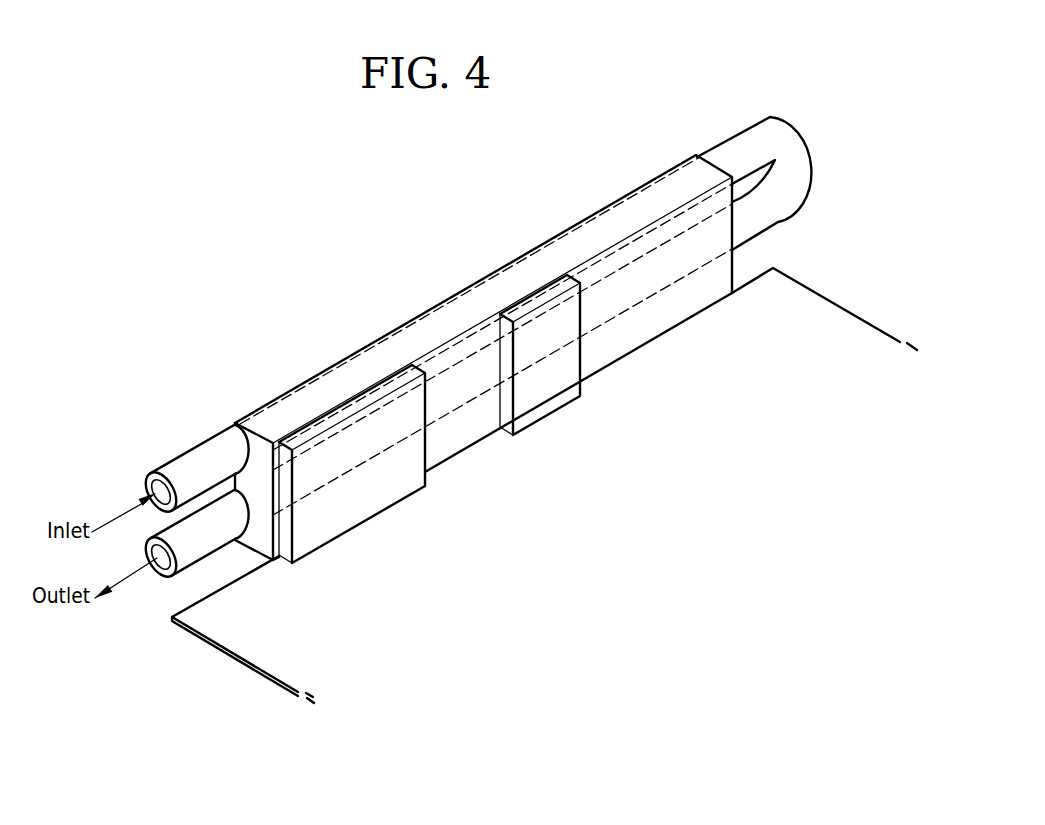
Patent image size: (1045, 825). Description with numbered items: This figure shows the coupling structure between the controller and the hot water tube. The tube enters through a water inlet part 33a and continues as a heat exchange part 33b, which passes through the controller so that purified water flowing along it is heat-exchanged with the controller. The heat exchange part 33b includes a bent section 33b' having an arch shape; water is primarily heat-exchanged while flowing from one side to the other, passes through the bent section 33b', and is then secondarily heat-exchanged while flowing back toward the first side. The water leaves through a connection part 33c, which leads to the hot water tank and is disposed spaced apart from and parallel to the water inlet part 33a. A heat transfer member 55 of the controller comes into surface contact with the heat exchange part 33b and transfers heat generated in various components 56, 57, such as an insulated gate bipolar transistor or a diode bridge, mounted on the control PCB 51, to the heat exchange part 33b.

The water inlet part 33a is at (143, 483).
The heat exchange part 33b is at (486, 336).
The bent section 33b' is at (761, 143).
The connection part 33c is at (143, 548).
The control PCB 51 is at (837, 305).
The heat transfer member 55 is at (317, 390).
The component 56 is at (357, 502).
The component 57 is at (543, 393).